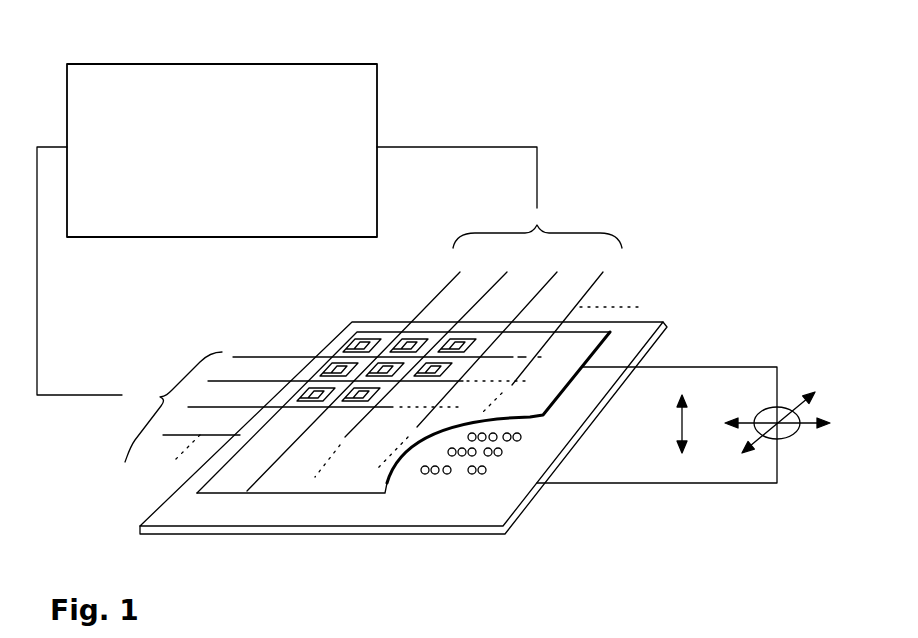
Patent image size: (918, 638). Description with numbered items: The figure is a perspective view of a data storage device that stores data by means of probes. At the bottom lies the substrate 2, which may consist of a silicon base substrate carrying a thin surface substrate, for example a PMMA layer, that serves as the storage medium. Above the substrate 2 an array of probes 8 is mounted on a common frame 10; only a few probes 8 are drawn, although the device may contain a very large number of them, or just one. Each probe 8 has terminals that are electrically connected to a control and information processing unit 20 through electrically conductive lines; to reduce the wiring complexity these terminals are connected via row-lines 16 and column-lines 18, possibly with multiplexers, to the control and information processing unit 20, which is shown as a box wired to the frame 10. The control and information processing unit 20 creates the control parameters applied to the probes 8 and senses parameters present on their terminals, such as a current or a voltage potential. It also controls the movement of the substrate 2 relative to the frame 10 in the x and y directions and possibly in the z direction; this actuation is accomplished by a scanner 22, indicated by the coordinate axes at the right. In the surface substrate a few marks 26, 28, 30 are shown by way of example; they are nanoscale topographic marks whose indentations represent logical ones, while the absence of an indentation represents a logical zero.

The substrate 2 is at (224, 537).
The probe 8 is at (407, 342).
The common frame 10 is at (222, 480).
The row-lines 16 is at (273, 380).
The column-lines 18 is at (600, 273).
The control and information processing unit 20 is at (127, 64).
The scanner 22 is at (801, 368).
The mark 26 is at (437, 474).
The mark 28 is at (449, 474).
The mark 30 is at (484, 474).